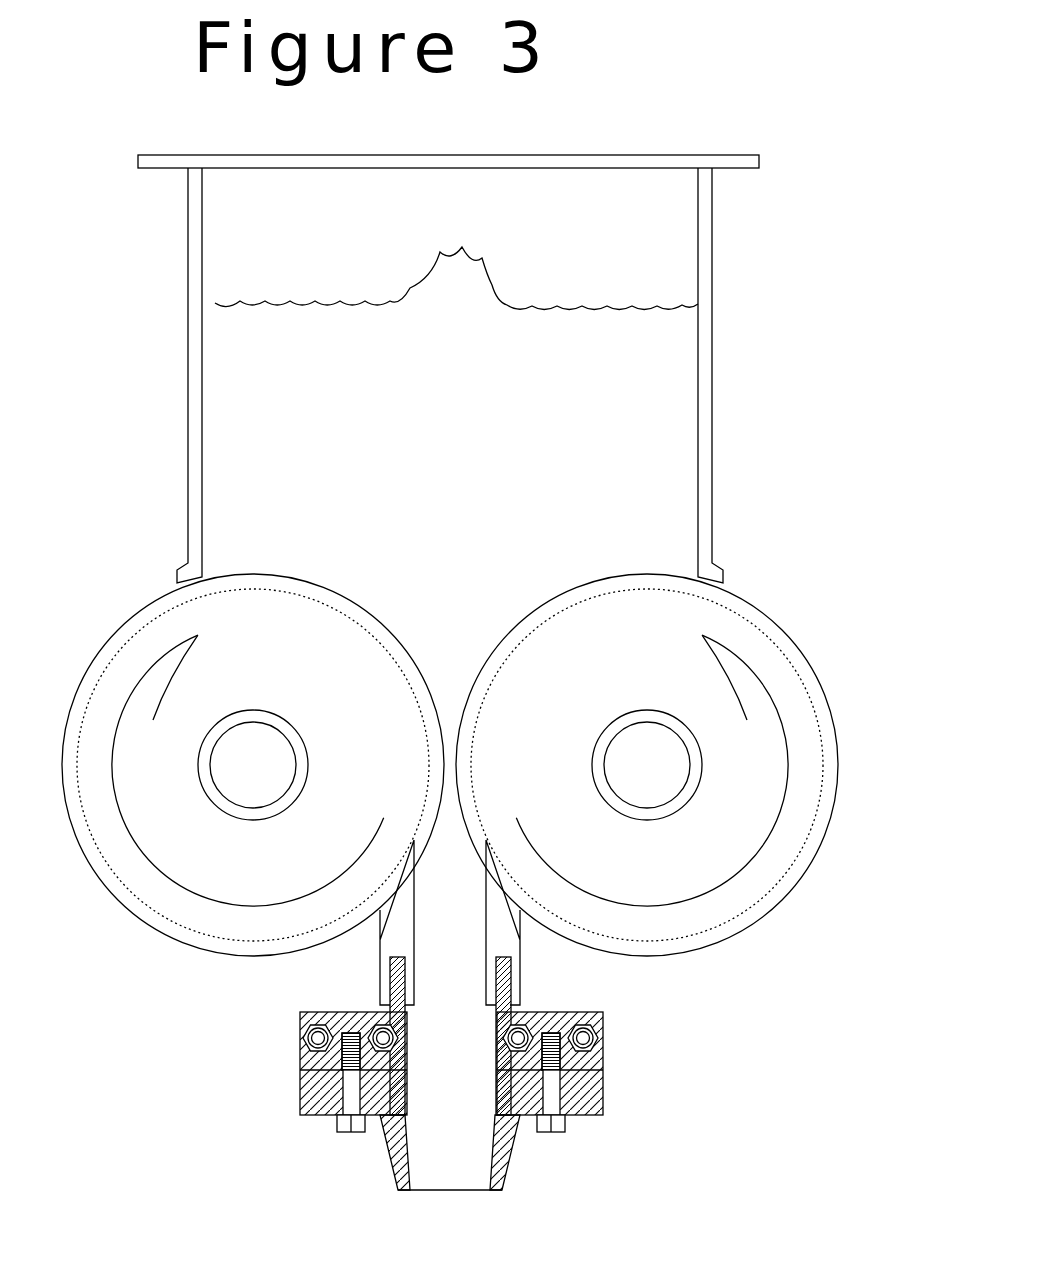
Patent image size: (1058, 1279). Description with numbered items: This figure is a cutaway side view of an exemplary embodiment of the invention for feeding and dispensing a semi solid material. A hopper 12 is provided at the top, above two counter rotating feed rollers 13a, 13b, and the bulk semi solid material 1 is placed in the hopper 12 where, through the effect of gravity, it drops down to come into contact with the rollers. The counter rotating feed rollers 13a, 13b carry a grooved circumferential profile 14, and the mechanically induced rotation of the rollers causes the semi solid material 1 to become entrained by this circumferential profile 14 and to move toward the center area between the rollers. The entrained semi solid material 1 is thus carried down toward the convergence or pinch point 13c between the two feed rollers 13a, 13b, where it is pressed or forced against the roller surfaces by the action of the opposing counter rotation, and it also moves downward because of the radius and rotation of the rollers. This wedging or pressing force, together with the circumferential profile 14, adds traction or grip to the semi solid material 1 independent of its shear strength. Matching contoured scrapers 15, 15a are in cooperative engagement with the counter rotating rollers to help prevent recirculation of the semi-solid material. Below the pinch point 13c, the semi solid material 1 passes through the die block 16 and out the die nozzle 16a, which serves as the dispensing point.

The hopper 12 is at (608, 155).
The semi solid material 1 is at (456, 314).
The circumferential profile 14 is at (123, 632).
The counter rotating feed roller 13a is at (450, 723).
The counter rotating feed roller 13b is at (248, 760).
The pinch point 13c is at (652, 761).
The contoured scraper 15 is at (382, 938).
The matching contoured scraper 15a is at (302, 1045).
The die block 16 is at (607, 1093).
The die nozzle 16a is at (515, 1153).